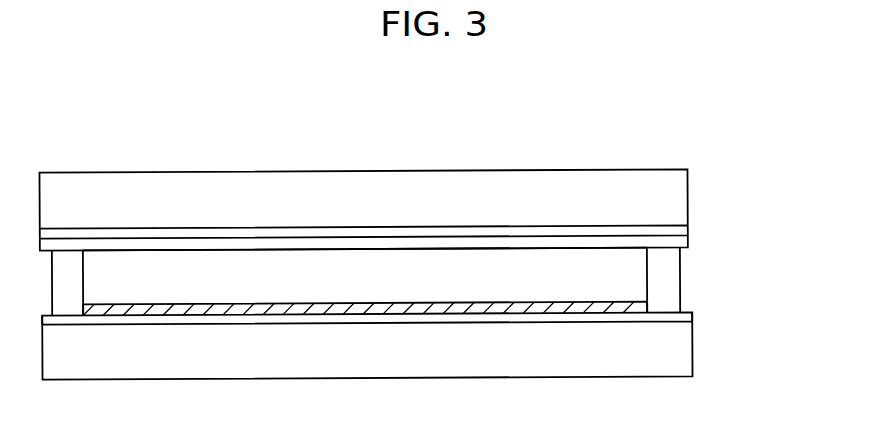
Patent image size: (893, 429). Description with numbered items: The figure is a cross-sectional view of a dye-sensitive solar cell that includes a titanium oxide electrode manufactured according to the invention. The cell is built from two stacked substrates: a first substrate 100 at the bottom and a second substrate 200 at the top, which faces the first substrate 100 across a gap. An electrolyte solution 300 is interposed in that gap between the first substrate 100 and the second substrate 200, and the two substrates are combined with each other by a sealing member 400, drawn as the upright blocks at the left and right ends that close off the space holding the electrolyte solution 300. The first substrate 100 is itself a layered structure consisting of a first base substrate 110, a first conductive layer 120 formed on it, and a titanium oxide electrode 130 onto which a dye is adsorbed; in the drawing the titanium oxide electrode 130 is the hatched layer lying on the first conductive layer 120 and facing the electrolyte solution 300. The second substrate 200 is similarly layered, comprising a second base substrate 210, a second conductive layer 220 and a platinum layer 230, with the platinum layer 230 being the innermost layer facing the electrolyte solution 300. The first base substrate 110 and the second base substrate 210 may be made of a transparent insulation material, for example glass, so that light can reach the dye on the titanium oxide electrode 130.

The first substrate 100 is at (778, 278).
The first base substrate 110 is at (683, 353).
The first conductive layer 120 is at (687, 318).
The titanium oxide electrode 130 is at (647, 307).
The second substrate 200 is at (778, 187).
The second base substrate 210 is at (682, 193).
The second conductive layer 220 is at (680, 230).
The platinum layer 230 is at (680, 240).
The electrolyte solution 300 is at (545, 263).
The sealing member 400 is at (660, 257).